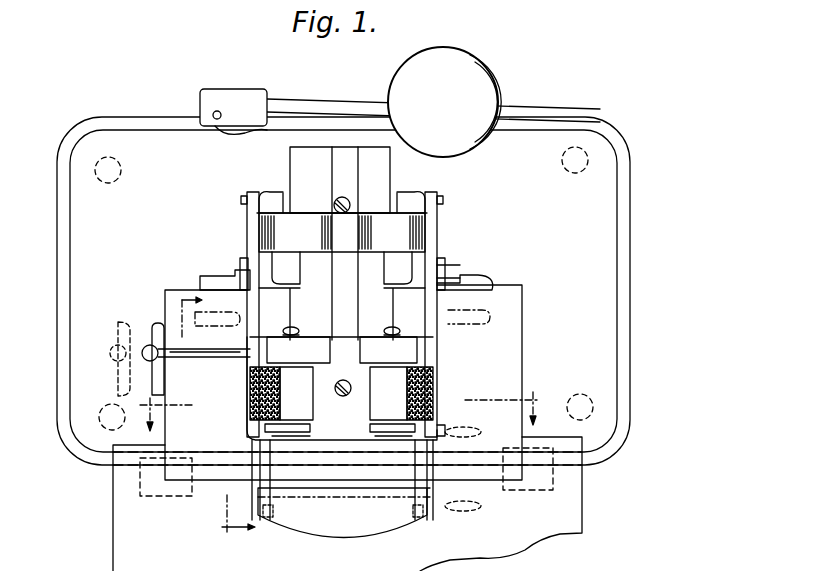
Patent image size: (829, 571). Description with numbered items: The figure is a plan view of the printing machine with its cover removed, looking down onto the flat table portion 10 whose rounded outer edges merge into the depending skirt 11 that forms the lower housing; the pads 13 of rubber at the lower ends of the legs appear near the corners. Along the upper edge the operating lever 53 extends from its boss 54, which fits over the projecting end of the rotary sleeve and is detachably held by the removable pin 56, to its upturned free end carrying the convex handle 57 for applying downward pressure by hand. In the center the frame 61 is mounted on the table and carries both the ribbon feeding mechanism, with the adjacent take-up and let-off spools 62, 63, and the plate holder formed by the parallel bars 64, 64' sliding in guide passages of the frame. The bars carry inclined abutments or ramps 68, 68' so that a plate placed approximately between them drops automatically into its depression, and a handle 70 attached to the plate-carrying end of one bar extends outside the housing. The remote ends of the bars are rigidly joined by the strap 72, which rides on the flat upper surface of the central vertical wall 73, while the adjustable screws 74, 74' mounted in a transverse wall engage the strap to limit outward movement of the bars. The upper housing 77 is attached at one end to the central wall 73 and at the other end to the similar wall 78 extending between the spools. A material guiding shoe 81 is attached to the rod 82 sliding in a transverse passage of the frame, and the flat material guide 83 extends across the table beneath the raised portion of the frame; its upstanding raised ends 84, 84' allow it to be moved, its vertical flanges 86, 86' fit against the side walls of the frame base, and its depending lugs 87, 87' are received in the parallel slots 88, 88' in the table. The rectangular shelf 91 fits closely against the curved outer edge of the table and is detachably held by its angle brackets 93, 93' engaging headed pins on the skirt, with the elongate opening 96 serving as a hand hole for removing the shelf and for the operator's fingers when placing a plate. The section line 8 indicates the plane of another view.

The table portion 10 is at (617, 185).
The depending skirt 11 is at (630, 300).
The pads 13 is at (100, 168).
The operating lever 53 is at (305, 106).
The boss 54 is at (205, 98).
The removable pin 56 is at (218, 111).
The handle 57 is at (444, 102).
The frame 61 is at (298, 181).
The take-up spool 62 is at (286, 382).
The let-off spool 63 is at (405, 381).
The bar 64 is at (287, 483).
The bar 64' is at (402, 480).
The inclined abutment 68 is at (271, 532).
The inclined abutment 68' is at (439, 530).
The handle 70 is at (455, 432).
The strap 72 is at (342, 232).
The central vertical wall 73 is at (345, 243).
The adjustable abutment screw 74 is at (281, 322).
The adjustable abutment screw 74' is at (402, 322).
The upper housing 77 is at (246, 196).
The wall 78 is at (342, 388).
The material guiding shoe 81 is at (158, 324).
The rod 82 is at (174, 358).
The material guide 83 is at (447, 275).
The raised end 84 is at (209, 273).
The raised end 84' is at (493, 274).
The vertical flange 86 is at (248, 192).
The vertical flange 86' is at (432, 189).
The depending lug 87 is at (256, 284).
The depending lug 87' is at (456, 289).
The slot 88 is at (227, 206).
The slot 88' is at (462, 203).
The shelf 91 is at (113, 543).
The angle bracket 93 is at (326, 474).
The angle bracket 93' is at (569, 469).
The elongate opening 96 is at (360, 548).
The section line 8 is at (343, 382).